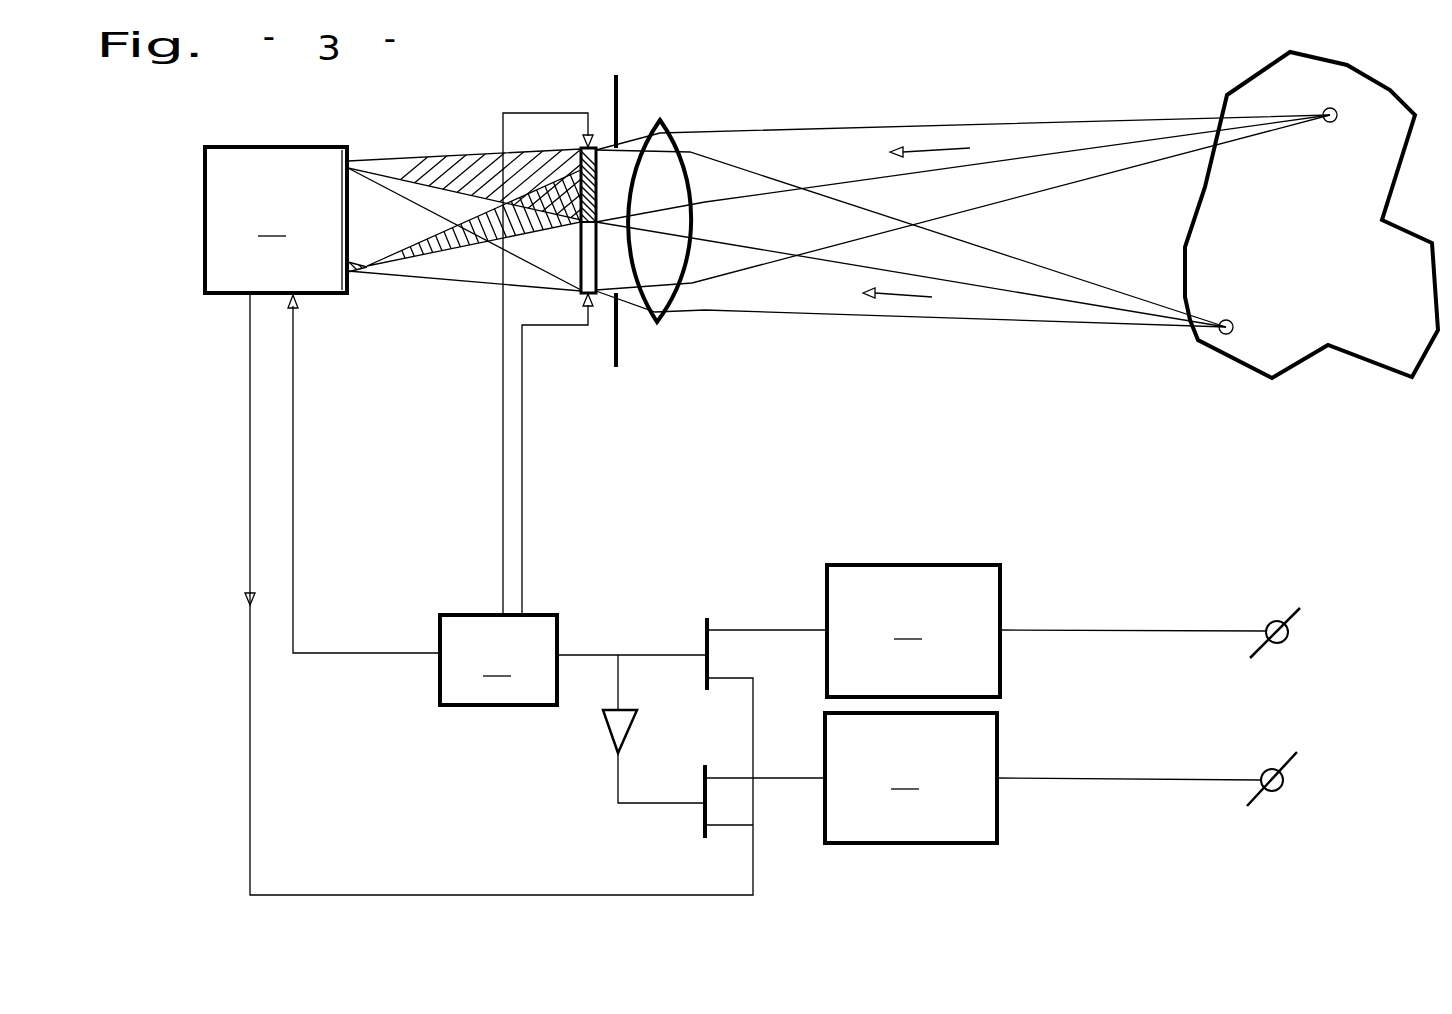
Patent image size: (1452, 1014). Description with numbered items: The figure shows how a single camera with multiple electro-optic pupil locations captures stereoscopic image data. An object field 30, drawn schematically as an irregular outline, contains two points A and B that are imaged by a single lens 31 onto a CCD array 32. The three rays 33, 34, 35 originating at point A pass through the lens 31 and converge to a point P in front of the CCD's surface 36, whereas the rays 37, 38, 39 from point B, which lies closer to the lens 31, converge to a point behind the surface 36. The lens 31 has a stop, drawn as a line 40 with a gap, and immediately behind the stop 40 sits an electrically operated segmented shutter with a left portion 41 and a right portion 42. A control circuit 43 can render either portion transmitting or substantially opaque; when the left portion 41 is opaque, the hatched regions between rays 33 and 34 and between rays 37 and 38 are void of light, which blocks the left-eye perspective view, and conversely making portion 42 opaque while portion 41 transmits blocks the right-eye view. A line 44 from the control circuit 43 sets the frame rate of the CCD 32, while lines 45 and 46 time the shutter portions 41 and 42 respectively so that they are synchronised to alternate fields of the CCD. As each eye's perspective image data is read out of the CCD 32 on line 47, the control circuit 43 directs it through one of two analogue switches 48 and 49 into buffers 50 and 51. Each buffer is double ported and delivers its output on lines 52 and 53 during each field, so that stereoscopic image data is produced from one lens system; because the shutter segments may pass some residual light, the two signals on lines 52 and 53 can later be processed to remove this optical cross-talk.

The object field 30 is at (1275, 60).
The point A is at (1337, 111).
The point B is at (1220, 333).
The lens 31 is at (663, 127).
The CCD array 32 is at (276, 220).
The ray 33 is at (1000, 123).
The ray 34 is at (1050, 150).
The ray 35 is at (1065, 188).
The CCD surface 36 is at (353, 212).
The ray 37 is at (1012, 253).
The ray 38 is at (987, 292).
The ray 39 is at (1033, 322).
The stop 40 is at (612, 103).
The left shutter portion 41 is at (588, 143).
The right shutter portion 42 is at (580, 257).
The control circuit 43 is at (573, 709).
The frame rate control line 44 is at (297, 423).
The shutter timing line 45 is at (503, 437).
The shutter timing line 46 is at (523, 440).
The read-out line 47 is at (247, 563).
The analogue switch 48 is at (702, 620).
The analogue switch 49 is at (700, 837).
The buffer 50 is at (913, 631).
The buffer 51 is at (911, 778).
The output line 52 is at (1160, 628).
The output line 53 is at (1178, 777).
The point P is at (368, 268).